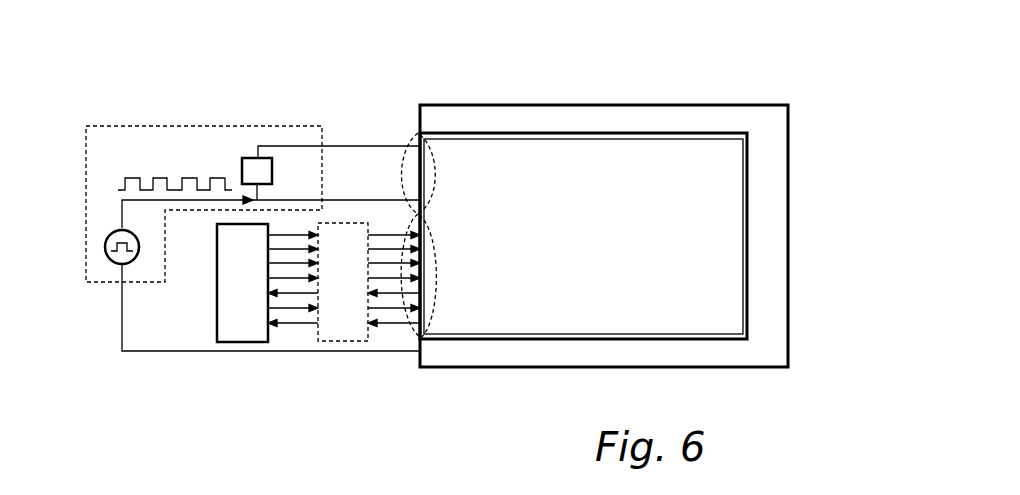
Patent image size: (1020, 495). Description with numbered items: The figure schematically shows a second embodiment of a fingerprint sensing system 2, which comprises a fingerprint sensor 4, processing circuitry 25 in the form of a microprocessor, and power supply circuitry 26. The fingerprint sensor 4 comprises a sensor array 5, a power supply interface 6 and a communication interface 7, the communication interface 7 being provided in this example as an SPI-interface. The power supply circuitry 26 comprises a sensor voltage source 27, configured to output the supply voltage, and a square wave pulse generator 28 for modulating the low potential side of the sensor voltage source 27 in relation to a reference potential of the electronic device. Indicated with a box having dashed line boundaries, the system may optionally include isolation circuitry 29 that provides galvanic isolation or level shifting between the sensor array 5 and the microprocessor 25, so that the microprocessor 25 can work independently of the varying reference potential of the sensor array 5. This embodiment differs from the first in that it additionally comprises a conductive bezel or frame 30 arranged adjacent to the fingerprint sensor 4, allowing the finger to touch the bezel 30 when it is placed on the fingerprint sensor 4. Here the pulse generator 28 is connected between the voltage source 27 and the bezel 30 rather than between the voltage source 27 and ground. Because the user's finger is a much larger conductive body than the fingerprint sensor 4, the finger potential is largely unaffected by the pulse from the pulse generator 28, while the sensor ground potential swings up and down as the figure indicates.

The fingerprint sensing system 2 is at (579, 225).
The fingerprint sensor 4 is at (705, 118).
The sensor array 5 is at (592, 247).
The power supply interface 6 is at (413, 140).
The communication interface 7 is at (431, 320).
The processing circuitry 25 is at (243, 343).
The power supply circuitry 26 is at (173, 125).
The sensor voltage source 27 is at (253, 158).
The square wave pulse generator 28 is at (113, 263).
The isolation circuitry 29 is at (345, 345).
The conductive bezel 30 is at (765, 334).